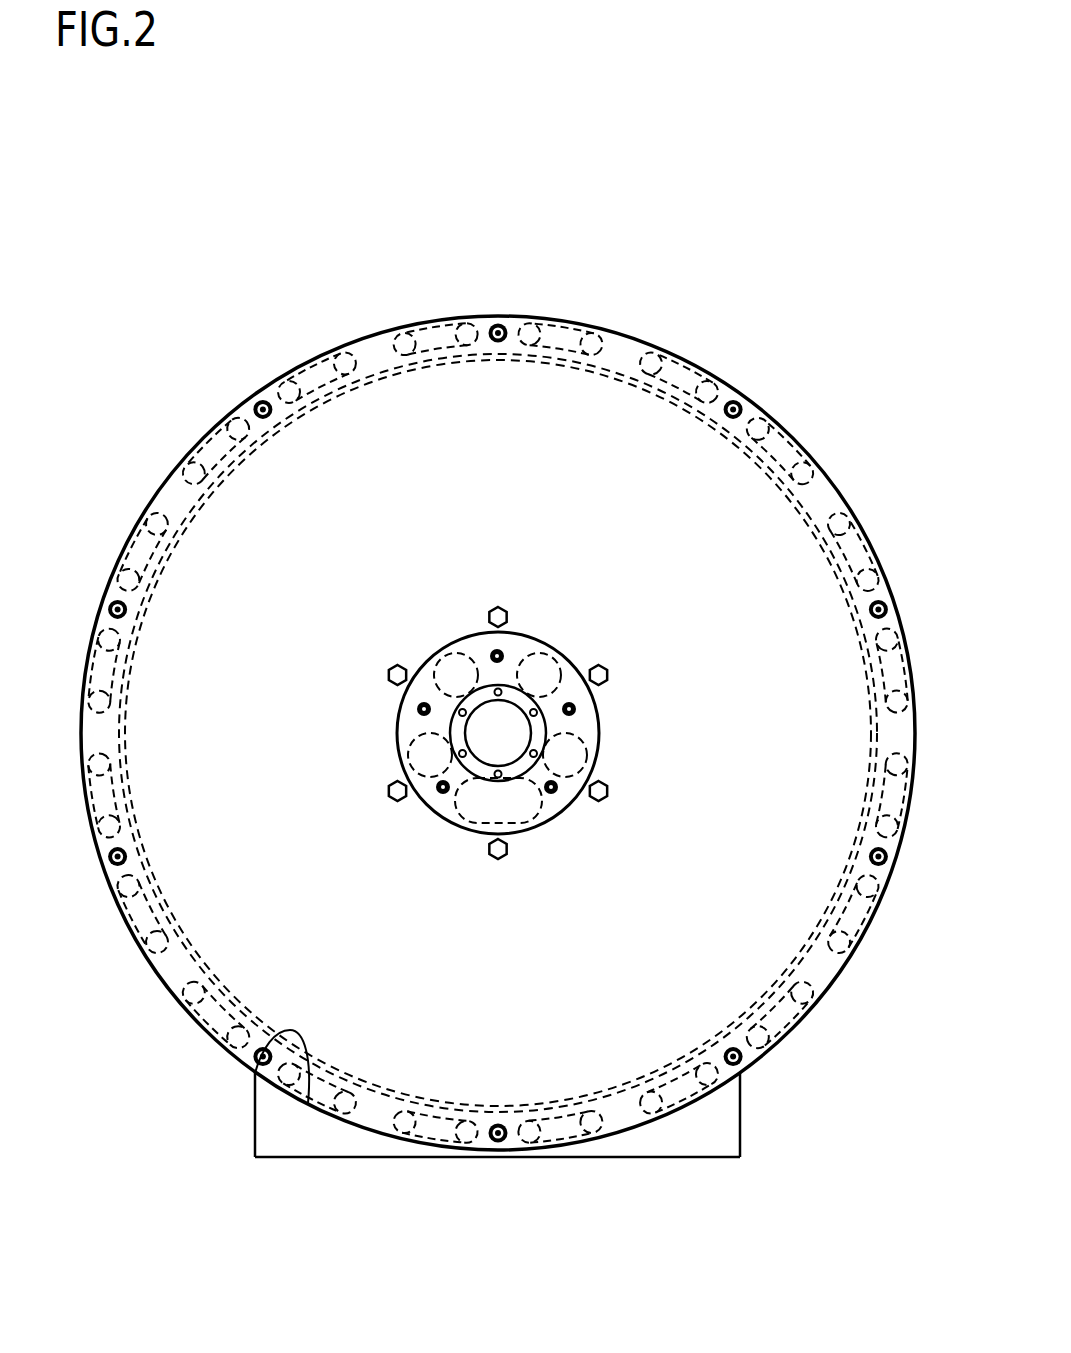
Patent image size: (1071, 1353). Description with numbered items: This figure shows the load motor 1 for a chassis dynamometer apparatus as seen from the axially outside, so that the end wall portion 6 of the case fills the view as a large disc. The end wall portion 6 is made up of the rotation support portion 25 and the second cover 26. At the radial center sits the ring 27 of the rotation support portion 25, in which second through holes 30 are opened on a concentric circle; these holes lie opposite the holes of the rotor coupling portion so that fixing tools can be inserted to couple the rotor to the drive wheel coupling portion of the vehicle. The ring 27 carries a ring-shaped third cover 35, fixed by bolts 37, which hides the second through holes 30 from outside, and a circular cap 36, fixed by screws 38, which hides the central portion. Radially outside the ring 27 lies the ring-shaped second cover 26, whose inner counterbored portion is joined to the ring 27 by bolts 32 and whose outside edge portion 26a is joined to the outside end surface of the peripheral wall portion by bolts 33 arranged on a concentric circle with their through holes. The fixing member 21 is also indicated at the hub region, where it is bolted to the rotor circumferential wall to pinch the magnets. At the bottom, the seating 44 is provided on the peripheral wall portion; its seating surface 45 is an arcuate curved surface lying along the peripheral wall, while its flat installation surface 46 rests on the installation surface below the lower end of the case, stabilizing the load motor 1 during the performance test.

The load motor 1 is at (714, 246).
The end wall portion 6 is at (205, 392).
The fixing member 21 is at (612, 762).
The rotation support portion 25 is at (585, 652).
The second cover 26 is at (228, 563).
The outside edge portion 26a is at (182, 486).
The ring 27 is at (590, 697).
The second through holes 30 is at (443, 660).
The bolts 32 is at (503, 608).
The bolts 33 is at (499, 328).
The third cover 35 is at (578, 724).
The circular cap 36 is at (490, 745).
The bolts 37 is at (490, 647).
The screws 38 is at (494, 687).
The seating 44 is at (305, 1138).
The seating surface 45 is at (255, 1048).
The installation surface 46 is at (398, 1158).